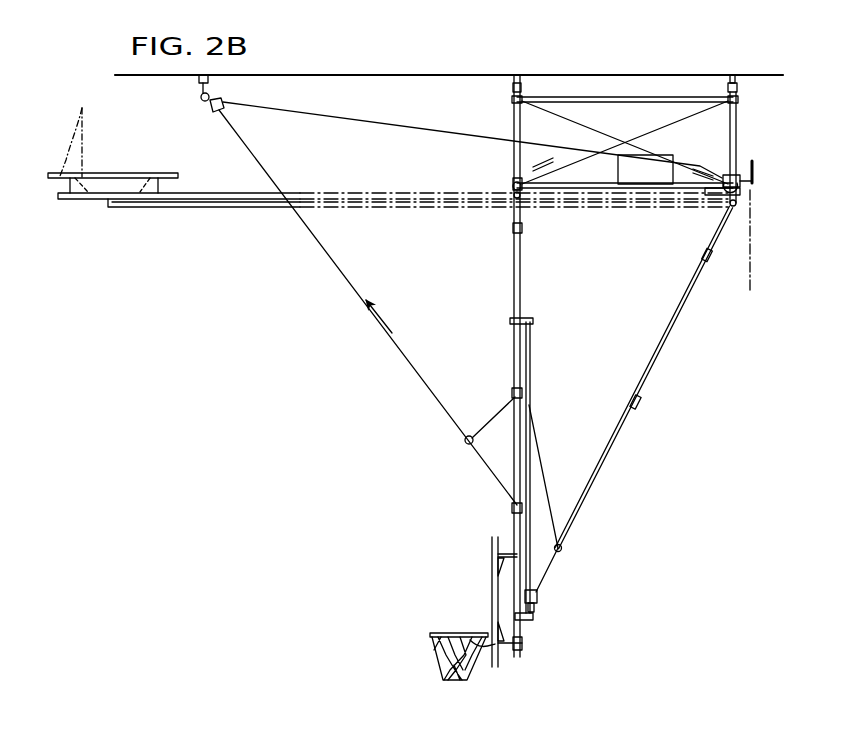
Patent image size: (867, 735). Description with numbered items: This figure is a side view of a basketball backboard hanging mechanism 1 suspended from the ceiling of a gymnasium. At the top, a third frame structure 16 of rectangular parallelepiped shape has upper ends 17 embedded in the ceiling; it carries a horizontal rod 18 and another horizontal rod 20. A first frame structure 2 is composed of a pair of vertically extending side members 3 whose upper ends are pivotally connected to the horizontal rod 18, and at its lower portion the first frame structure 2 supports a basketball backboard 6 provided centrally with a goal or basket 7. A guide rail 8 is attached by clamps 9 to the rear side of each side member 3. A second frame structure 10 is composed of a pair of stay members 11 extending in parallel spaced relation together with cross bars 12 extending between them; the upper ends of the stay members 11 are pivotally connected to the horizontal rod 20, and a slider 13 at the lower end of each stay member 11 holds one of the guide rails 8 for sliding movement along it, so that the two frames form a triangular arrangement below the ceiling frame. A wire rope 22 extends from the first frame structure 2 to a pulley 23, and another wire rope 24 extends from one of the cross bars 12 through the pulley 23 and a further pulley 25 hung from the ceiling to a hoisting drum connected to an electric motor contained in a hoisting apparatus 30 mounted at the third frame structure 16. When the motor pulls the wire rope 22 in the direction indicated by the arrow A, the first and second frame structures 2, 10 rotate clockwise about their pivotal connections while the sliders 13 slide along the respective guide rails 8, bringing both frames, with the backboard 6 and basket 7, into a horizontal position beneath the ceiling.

The basketball backboard hanging mechanism 1 is at (350, 395).
The first frame structure 2 is at (508, 330).
The side member 3 is at (513, 278).
The basketball backboard 6 is at (497, 566).
The goal or basket 7 is at (440, 665).
The guide rail 8 is at (531, 380).
The clamp 9 is at (527, 319).
The second frame structure 10 is at (623, 440).
The stay member 11 is at (675, 330).
The cross bar 12 is at (639, 404).
The slider 13 is at (539, 597).
The third frame structure 16 is at (739, 137).
The upper end 17 is at (738, 98).
The horizontal rod 18 is at (513, 189).
The horizontal rod 20 is at (737, 205).
The wire rope 22 is at (377, 322).
The pulley 23 is at (467, 443).
The wire rope 24 is at (541, 472).
The pulley 25 is at (213, 109).
The hoisting apparatus 30 is at (648, 172).
The arrow A is at (373, 301).